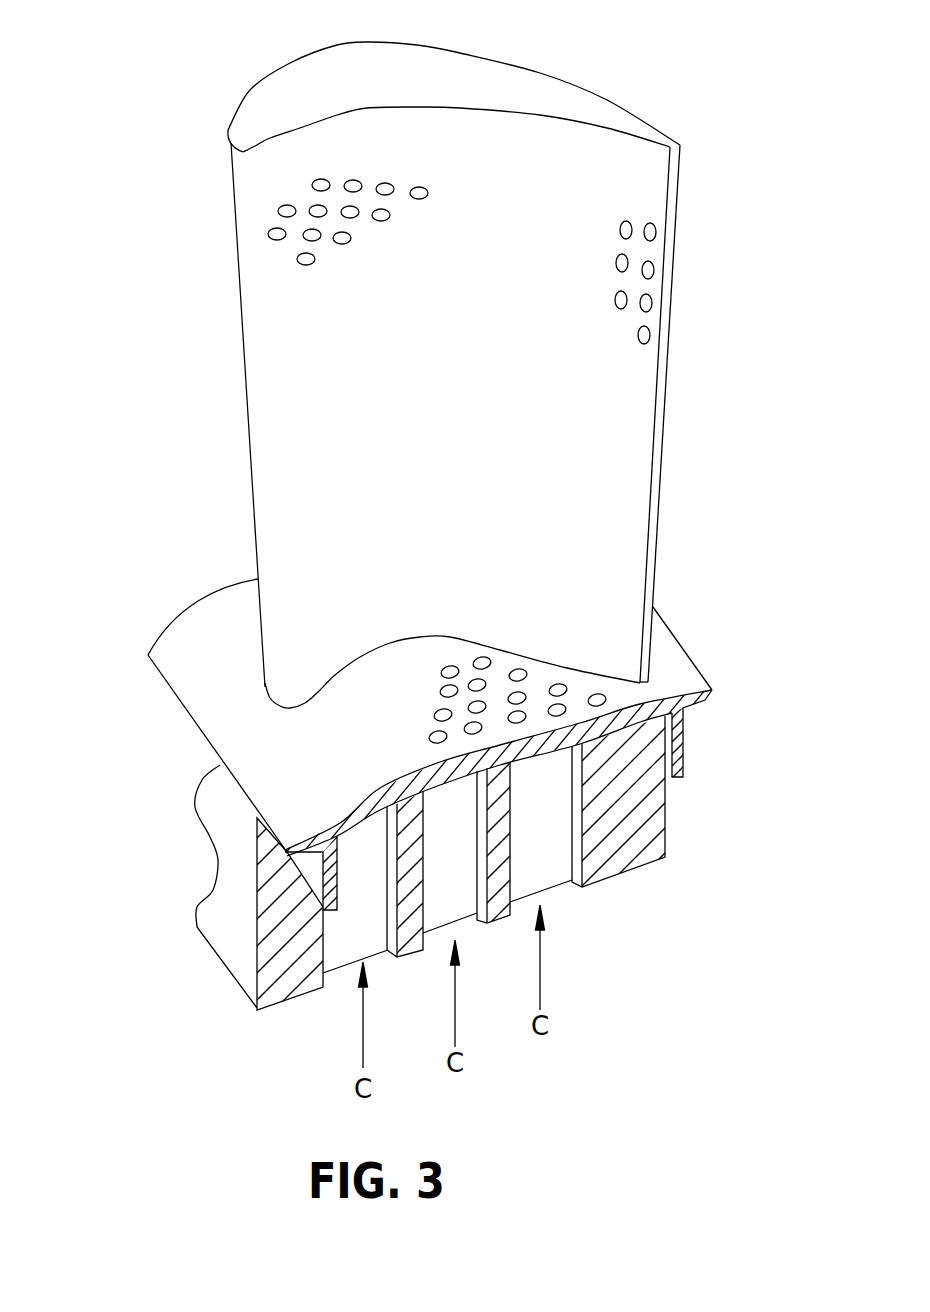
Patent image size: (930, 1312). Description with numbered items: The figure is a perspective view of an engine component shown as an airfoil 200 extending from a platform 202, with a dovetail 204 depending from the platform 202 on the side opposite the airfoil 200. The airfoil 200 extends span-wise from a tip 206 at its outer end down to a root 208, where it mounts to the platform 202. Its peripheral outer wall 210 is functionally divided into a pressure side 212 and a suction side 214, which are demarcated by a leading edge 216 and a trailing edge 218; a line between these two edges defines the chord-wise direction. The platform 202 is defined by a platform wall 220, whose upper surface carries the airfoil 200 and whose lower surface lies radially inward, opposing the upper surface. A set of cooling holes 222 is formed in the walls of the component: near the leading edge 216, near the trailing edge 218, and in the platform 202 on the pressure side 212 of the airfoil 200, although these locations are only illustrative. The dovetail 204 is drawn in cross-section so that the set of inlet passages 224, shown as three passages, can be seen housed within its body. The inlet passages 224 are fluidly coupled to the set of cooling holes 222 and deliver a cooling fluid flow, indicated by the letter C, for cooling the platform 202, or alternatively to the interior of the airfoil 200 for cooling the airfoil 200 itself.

The airfoil 200 is at (222, 295).
The platform 202 is at (187, 658).
The dovetail 204 is at (233, 873).
The tip 206 is at (293, 92).
The root 208 is at (623, 677).
The peripheral outer wall 210 is at (577, 380).
The pressure side 212 is at (380, 108).
The suction side 214 is at (467, 52).
The leading edge 216 is at (243, 152).
The trailing edge 218 is at (680, 173).
The platform wall 220 is at (688, 682).
The set of cooling holes 222 is at (270, 233).
The inlet passages 224 is at (448, 912).